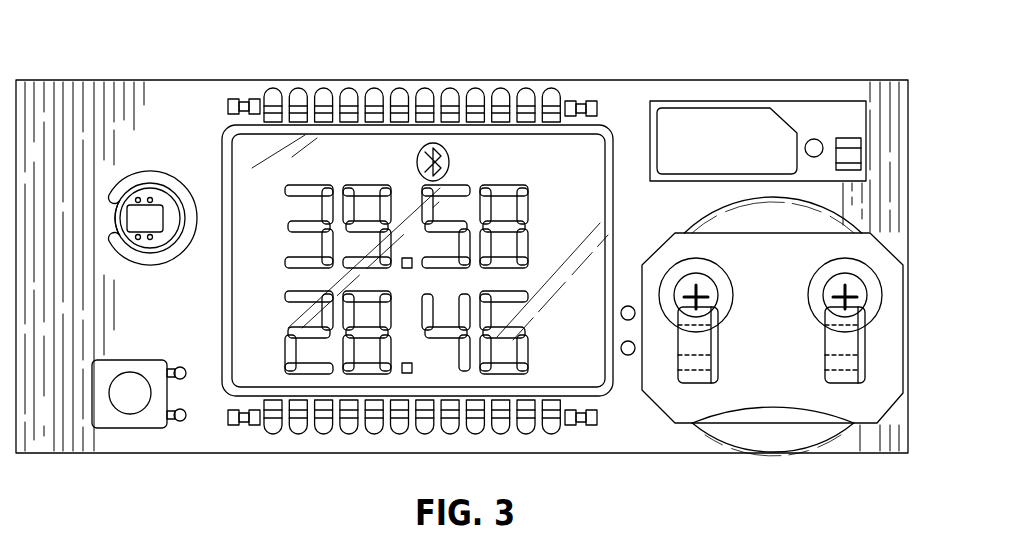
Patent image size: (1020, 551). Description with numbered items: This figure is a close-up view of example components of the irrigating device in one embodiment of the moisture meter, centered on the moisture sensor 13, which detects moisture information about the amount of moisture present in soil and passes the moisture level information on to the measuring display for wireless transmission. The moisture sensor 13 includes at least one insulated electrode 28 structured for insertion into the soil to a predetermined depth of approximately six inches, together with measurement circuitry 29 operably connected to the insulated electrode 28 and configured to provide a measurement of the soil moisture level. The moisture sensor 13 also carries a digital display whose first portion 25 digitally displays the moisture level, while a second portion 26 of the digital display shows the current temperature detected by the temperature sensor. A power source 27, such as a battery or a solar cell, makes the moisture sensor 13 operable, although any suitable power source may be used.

The moisture sensor 13 is at (742, 79).
The first portion of the digital display 25 is at (553, 250).
The second portion of the digital display 26 is at (527, 358).
The power source 27 is at (730, 302).
The insulated electrode 28 is at (154, 170).
The measurement circuitry 29 is at (553, 436).